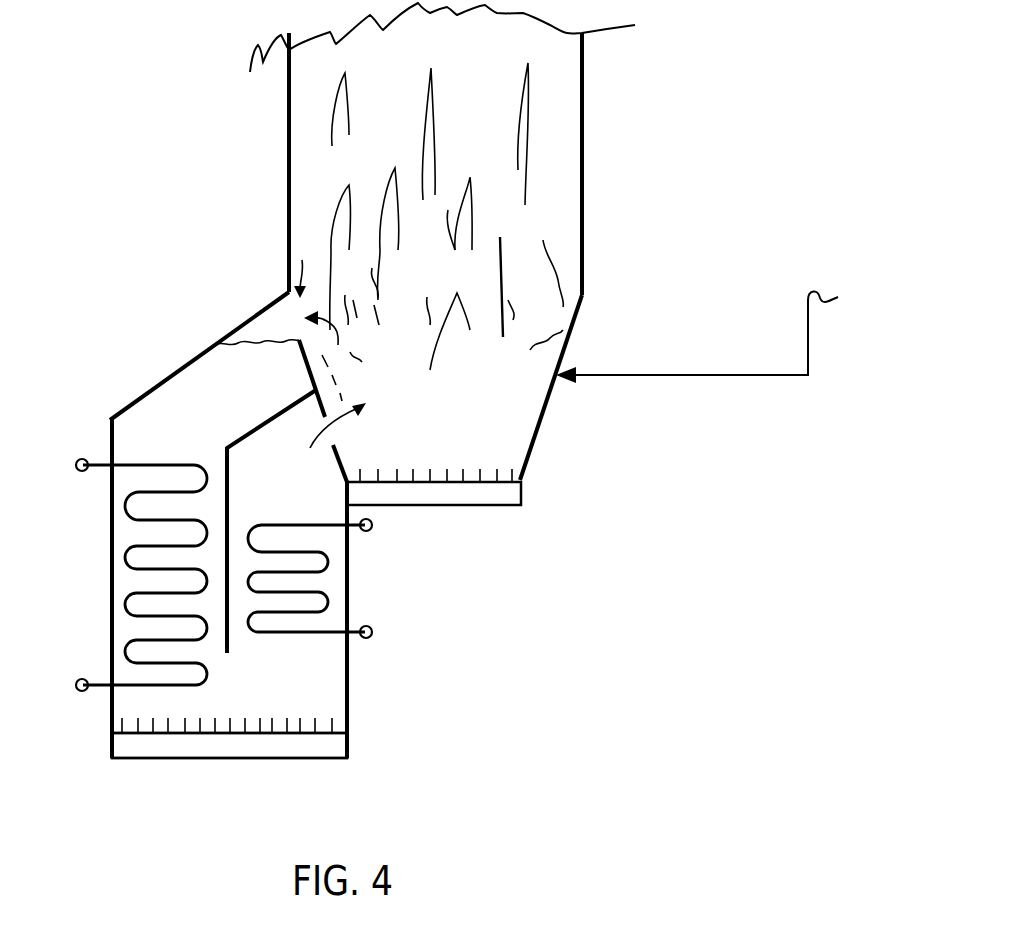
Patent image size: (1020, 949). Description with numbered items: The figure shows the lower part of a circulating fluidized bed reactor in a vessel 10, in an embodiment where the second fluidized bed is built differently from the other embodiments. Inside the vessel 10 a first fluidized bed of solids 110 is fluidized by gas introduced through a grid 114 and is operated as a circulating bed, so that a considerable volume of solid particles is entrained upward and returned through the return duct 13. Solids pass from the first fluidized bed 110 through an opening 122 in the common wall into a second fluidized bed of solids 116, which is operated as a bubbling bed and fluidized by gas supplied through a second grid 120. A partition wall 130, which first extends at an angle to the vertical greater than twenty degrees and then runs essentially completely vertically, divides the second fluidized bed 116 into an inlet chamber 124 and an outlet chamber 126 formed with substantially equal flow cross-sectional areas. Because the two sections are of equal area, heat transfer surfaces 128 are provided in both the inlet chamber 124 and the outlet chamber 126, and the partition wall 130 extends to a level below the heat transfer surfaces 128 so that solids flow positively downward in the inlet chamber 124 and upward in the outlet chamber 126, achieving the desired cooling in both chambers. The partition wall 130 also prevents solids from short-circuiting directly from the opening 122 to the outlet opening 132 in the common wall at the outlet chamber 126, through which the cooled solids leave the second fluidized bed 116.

The vessel 10 is at (583, 102).
The first fluidized bed of solids 110 is at (537, 243).
The opening 122 is at (298, 318).
The inlet chamber 124 is at (143, 425).
The second fluidized bed of solids 116 is at (62, 440).
The outlet chamber 126 is at (301, 495).
The partition wall 130 is at (222, 448).
The outlet opening 132 is at (343, 426).
The grid 114 is at (497, 493).
The return duct 13 is at (740, 378).
The heat transfer surfaces 128 is at (128, 550).
The second grid 120 is at (200, 738).